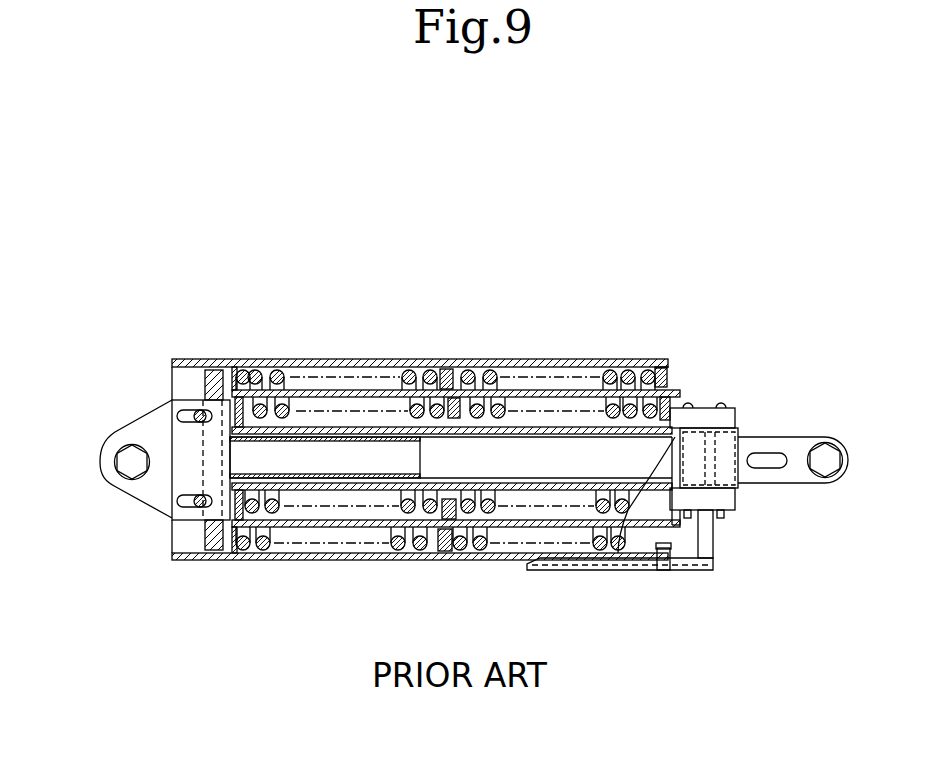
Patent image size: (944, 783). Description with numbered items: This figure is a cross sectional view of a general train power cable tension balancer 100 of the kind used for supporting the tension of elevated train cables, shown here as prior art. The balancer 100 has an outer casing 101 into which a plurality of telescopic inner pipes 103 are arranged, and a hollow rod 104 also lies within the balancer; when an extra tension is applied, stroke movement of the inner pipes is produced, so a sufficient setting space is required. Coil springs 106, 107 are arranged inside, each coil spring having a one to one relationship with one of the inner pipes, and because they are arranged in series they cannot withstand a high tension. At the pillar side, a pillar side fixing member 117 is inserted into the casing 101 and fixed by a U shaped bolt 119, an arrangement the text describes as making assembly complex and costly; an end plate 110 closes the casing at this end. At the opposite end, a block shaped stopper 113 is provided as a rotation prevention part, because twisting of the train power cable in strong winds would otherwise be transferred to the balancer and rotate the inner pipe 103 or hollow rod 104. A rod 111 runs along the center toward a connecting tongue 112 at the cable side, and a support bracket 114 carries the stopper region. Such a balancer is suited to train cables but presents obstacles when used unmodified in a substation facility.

The train cable tension balancer 100 is at (479, 200).
The casing 101 is at (398, 360).
The inner pipe 103 is at (343, 390).
The hollow rod 104 is at (543, 427).
The coil spring 106 is at (276, 370).
The coil spring 107 is at (610, 404).
The end plate 110 is at (212, 549).
The rod 111 is at (421, 460).
The connecting tongue 112 is at (816, 437).
The block shaped stopper 113 is at (708, 408).
The support bracket 114 is at (713, 548).
The pillar side fixing member 117 is at (100, 452).
The U shaped bolt 119 is at (183, 418).